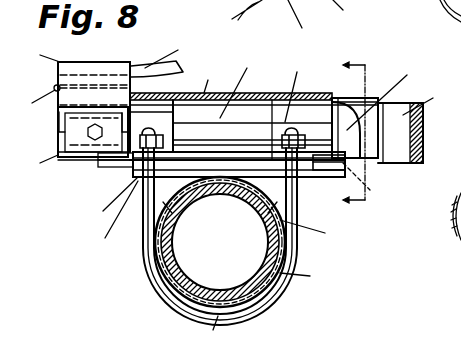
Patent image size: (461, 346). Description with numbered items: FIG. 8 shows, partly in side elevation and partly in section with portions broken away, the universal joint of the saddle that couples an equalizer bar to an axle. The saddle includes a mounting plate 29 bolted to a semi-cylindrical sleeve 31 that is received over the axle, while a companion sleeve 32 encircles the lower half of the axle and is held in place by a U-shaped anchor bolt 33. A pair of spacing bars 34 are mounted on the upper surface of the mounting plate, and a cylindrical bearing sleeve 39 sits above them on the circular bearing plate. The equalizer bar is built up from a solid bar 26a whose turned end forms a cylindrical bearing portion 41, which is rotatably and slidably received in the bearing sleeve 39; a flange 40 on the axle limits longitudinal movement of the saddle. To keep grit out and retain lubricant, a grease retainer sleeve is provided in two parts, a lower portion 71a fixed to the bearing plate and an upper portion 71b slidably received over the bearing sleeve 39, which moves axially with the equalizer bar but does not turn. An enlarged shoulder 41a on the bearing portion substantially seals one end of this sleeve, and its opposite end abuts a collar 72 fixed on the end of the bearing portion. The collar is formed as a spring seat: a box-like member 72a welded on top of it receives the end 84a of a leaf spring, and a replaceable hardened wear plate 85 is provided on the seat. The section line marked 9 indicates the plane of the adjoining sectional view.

The solid bar 26a is at (419, 131).
The mounting plate 29 is at (108, 201).
The semi-cylindrical sleeve 31 is at (253, 205).
The companion sleeve 32 is at (242, 242).
The U-shaped anchor bolt 33 is at (252, 173).
The spacing bar 34 is at (211, 189).
The cylindrical bearing sleeve 39 is at (237, 108).
The flange 40 is at (304, 23).
The bearing portion 41 is at (221, 89).
The enlarged shoulder 41a is at (384, 109).
The lower portion of grease retainer sleeve 71a is at (362, 183).
The upper portion of grease retainer sleeve 71b is at (230, 82).
The collar 72 is at (74, 142).
The box-like member 72a is at (69, 75).
The end of leaf spring 84a is at (169, 57).
The hardened wear plate 85 is at (35, 102).
The section line 9- 9 is at (346, 138).